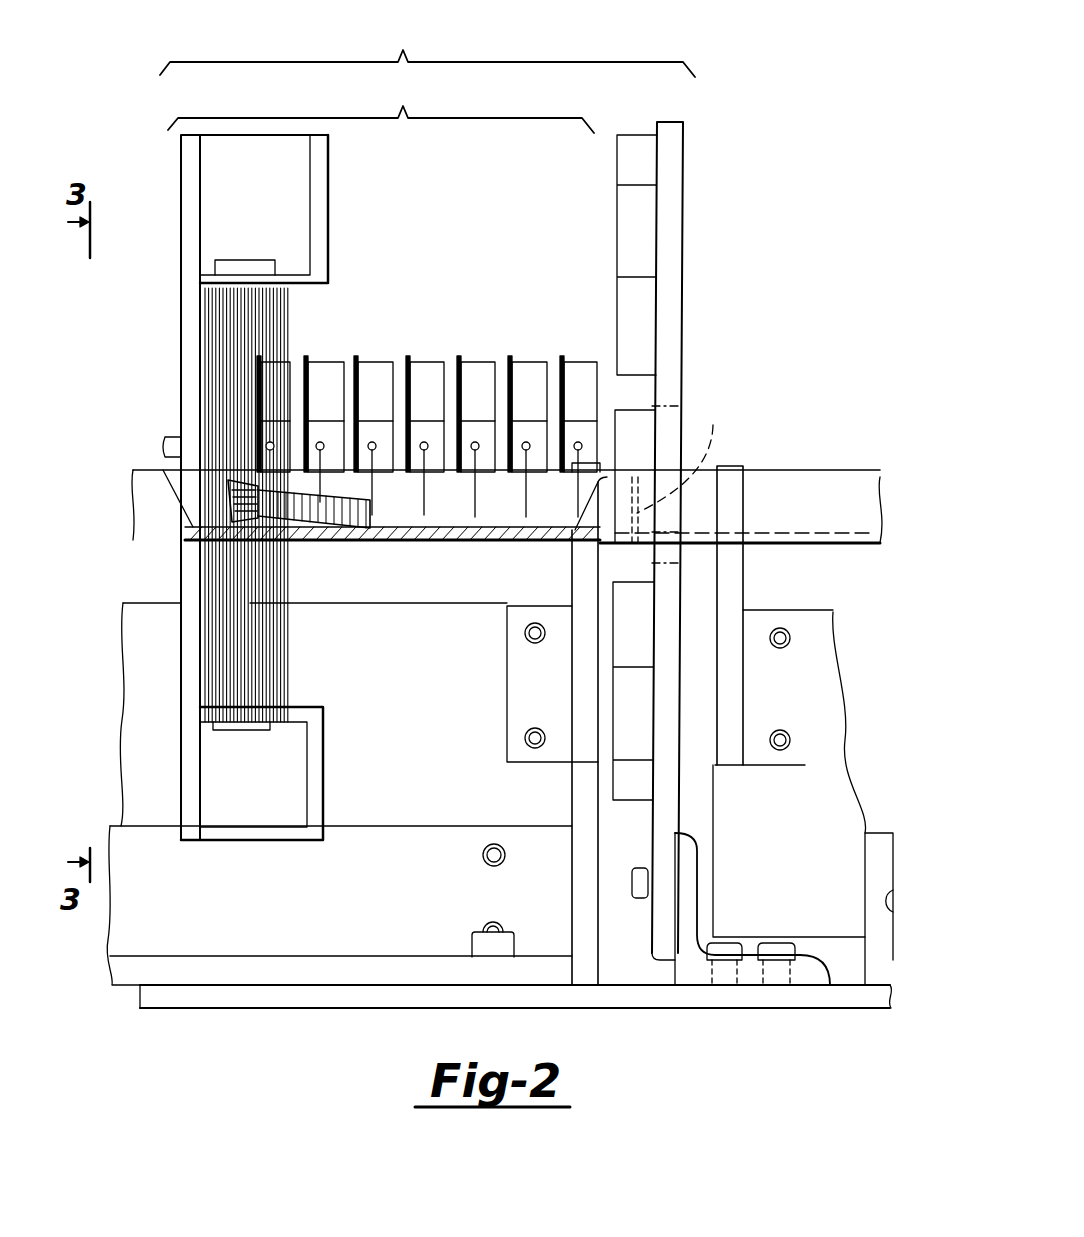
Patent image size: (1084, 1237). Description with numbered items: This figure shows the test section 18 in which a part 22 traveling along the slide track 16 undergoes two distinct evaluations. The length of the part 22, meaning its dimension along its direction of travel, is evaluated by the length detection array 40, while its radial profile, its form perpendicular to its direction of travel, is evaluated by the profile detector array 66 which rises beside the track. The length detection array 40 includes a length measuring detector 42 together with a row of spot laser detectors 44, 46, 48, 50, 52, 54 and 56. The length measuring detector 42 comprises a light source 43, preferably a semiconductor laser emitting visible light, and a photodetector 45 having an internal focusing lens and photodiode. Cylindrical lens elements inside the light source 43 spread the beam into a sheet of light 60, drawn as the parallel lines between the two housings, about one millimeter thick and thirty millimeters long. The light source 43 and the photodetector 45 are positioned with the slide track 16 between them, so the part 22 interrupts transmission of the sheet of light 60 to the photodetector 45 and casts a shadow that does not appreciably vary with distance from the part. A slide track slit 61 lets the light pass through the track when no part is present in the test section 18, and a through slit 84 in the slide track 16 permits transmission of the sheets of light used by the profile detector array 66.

The slide track 16 is at (818, 547).
The test section 18 is at (427, 47).
The part 22 is at (329, 512).
The length detection array 40 is at (381, 103).
The length measuring detector 42 is at (168, 292).
The light source 43 is at (328, 240).
The spot laser detector 44 is at (274, 357).
The photodetector 45 is at (310, 795).
The spot laser detector 46 is at (323, 360).
The spot laser detector 48 is at (383, 360).
The spot laser detector 50 is at (426, 360).
The spot laser detector 52 is at (475, 360).
The spot laser detector 54 is at (528, 360).
The spot laser detector 56 is at (578, 360).
The sheet of light 60 is at (267, 668).
The slide track slit 61 is at (390, 535).
The profile detector array 66 is at (683, 250).
The through slit 84 is at (682, 455).